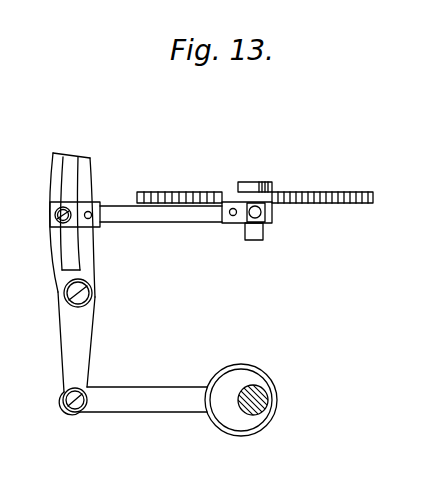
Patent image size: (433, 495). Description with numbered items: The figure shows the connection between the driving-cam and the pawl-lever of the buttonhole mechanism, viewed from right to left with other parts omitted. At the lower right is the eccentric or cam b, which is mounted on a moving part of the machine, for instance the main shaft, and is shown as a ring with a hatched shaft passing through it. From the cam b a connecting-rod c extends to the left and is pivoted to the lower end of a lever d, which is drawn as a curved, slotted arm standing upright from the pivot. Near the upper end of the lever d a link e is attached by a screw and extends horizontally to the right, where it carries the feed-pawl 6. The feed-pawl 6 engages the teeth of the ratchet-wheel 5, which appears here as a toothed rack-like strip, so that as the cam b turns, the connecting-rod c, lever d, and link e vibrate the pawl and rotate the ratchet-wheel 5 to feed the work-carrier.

The lever d is at (50, 248).
The link e is at (168, 214).
The ratchet-wheel 5 is at (176, 198).
The feed-pawl 6 is at (278, 199).
The connecting-rod c is at (132, 347).
The eccentric or cam b is at (240, 375).